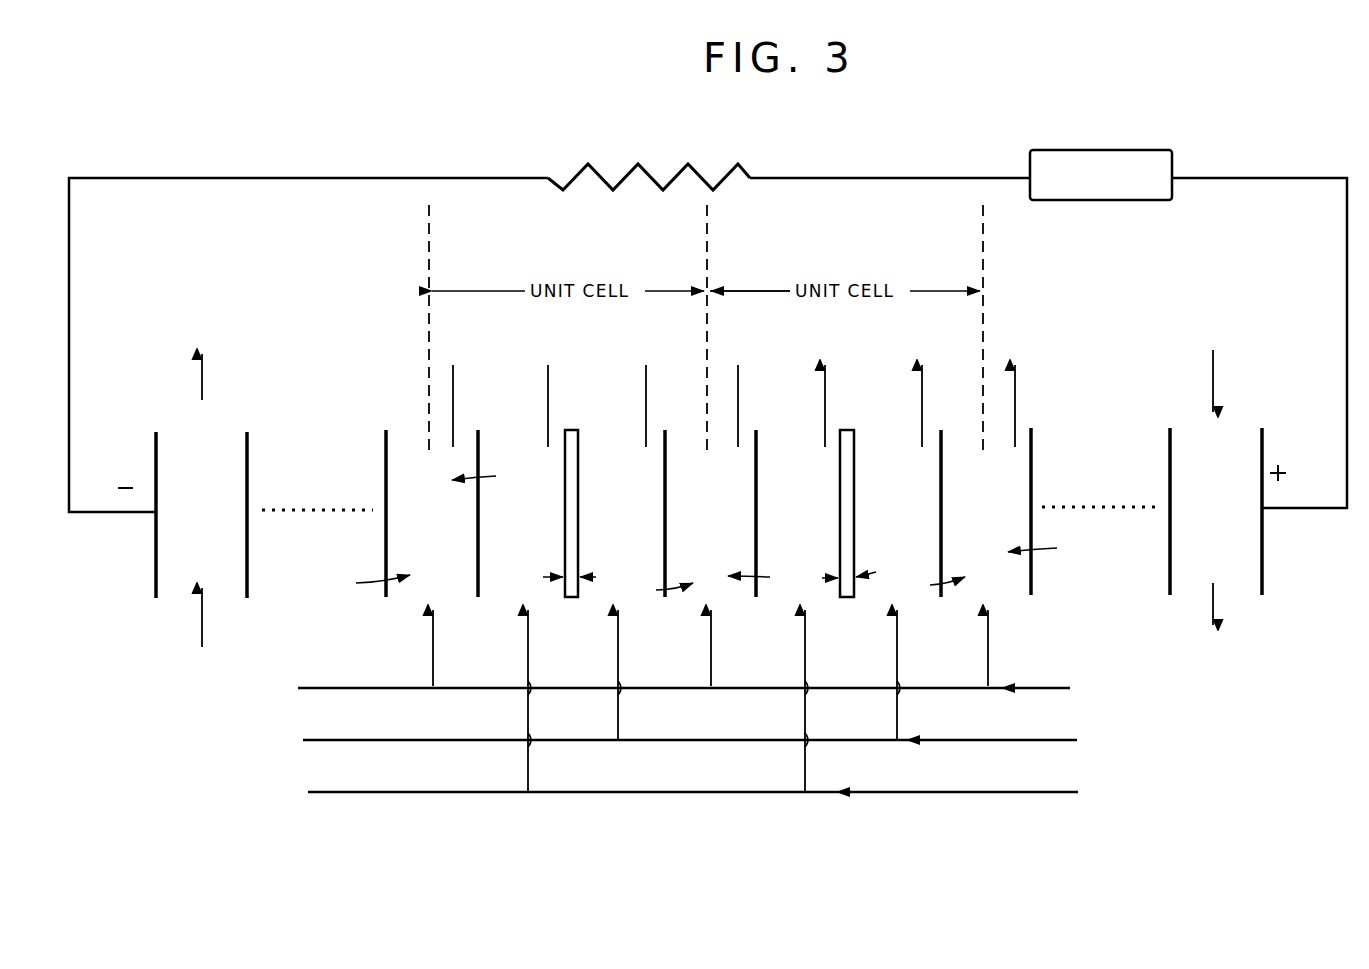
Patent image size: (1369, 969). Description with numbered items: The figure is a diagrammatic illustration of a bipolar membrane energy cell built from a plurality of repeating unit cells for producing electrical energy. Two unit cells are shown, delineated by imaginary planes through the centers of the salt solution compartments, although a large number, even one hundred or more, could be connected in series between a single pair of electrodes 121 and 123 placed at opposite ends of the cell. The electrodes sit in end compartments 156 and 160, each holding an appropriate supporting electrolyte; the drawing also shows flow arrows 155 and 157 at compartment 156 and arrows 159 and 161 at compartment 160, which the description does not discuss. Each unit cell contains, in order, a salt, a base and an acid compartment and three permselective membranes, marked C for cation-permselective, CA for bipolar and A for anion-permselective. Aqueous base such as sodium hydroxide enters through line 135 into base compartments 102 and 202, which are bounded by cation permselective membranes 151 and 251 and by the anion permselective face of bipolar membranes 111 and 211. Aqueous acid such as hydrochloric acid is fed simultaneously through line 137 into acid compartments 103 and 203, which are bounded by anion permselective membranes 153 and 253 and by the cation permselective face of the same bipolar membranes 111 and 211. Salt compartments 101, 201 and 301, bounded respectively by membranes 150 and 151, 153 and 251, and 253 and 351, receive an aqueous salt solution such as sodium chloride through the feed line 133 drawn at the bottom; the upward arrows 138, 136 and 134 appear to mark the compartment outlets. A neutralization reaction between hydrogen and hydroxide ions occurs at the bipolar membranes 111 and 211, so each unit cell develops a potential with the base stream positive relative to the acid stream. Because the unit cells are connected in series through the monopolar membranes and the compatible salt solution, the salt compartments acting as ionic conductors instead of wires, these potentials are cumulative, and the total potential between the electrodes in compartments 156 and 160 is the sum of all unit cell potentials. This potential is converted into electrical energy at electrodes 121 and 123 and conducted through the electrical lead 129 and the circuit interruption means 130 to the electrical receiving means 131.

The electrical lead 129 is at (272, 178).
The electrical receiving means 131 is at (692, 172).
The circuit interruption means 130 is at (1122, 183).
The electrode 123 is at (155, 462).
The electrode 121 is at (1262, 448).
The compartment 160 is at (178, 517).
The cathode compartment outlet 159 is at (202, 370).
The cathode compartment inlet 161 is at (202, 620).
The compartment 156 is at (1194, 519).
The anode compartment inlet 155 is at (1213, 388).
The anode compartment outlet 157 is at (1213, 612).
The salt compartment 301 is at (414, 517).
The permselective membrane 351 is at (386, 548).
The anion permselective membrane 253 is at (478, 553).
The acid compartment 203 is at (508, 517).
The bipolar membrane 211 is at (578, 452).
The base compartment 202 is at (604, 517).
The cation permselective membrane 251 is at (665, 553).
The salt compartment 201 is at (691, 517).
The anion permselective membrane 153 is at (756, 553).
The acid compartment 103 is at (784, 517).
The bipolar membrane 111 is at (854, 442).
The base compartment 102 is at (879, 517).
The cation permselective membrane 151 is at (941, 553).
The salt compartment 101 is at (963, 517).
The permselective membrane 150 is at (1031, 562).
The brine compartment outlet 138 is at (453, 388).
The acid compartment outlet 136 is at (548, 380).
The base compartment outlet 134 is at (646, 380).
The sodium chloride feed line 133 is at (1037, 688).
The line 135 is at (1037, 740).
The line 137 is at (1037, 792).